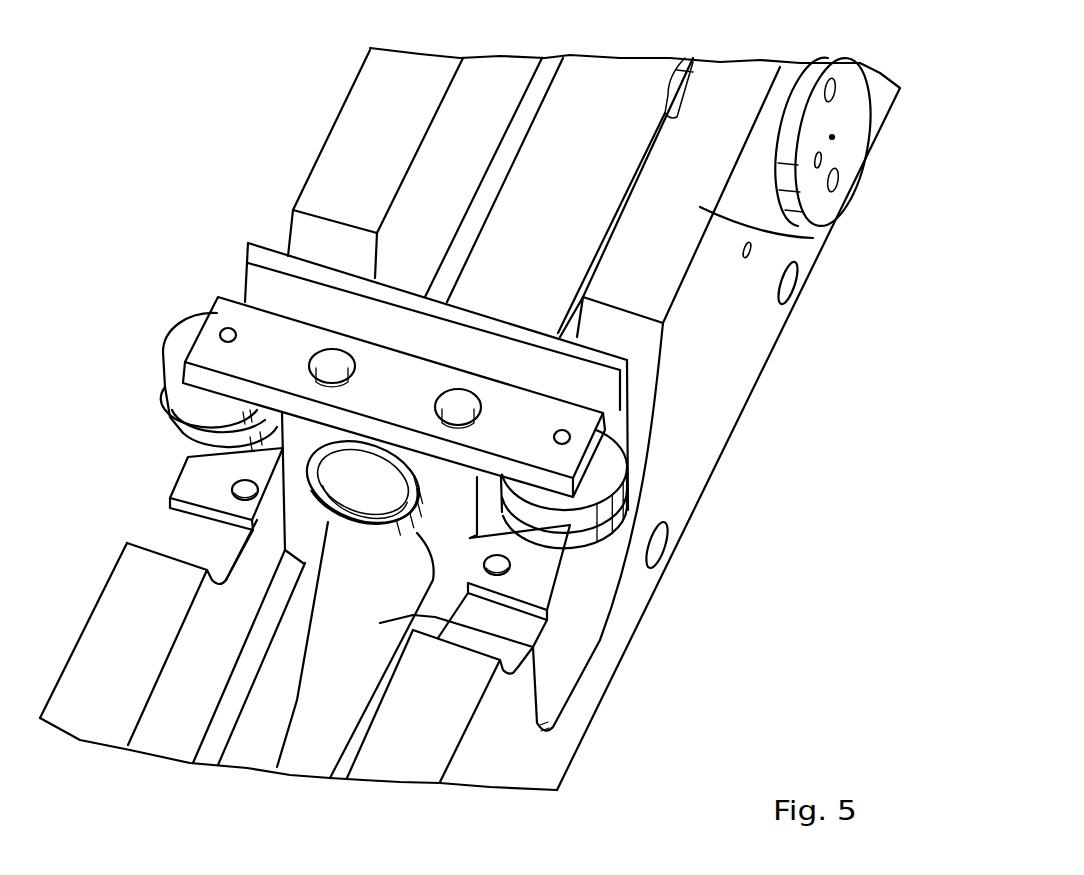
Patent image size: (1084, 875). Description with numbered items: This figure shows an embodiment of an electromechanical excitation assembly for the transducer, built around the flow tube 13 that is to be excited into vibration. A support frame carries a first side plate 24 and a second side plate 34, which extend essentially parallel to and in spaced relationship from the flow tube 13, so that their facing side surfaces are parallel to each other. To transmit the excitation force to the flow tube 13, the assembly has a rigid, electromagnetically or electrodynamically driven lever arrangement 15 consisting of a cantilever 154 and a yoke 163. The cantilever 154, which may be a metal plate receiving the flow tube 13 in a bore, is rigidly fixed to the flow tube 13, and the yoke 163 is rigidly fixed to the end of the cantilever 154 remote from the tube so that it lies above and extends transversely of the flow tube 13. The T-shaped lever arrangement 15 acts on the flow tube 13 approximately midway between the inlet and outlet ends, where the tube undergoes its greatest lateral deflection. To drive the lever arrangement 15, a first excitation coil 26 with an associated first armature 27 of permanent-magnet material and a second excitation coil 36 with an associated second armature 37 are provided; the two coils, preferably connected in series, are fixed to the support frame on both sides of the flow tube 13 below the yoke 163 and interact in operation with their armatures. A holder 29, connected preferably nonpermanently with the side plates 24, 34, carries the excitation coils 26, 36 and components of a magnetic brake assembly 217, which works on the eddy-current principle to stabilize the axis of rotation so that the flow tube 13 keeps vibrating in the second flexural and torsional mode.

The flow tube 13 is at (353, 717).
The lever arrangement 15 is at (170, 315).
The first side plate 24 is at (330, 165).
The first excitation coil 26 is at (167, 433).
The first armature 27 is at (160, 340).
The holder 29 is at (610, 380).
The second side plate 34 is at (813, 238).
The second excitation coil 36 is at (590, 560).
The second armature 37 is at (643, 513).
The cantilever 154 is at (300, 447).
The yoke 163 is at (240, 315).
The magnetic brake assembly 217 is at (362, 495).